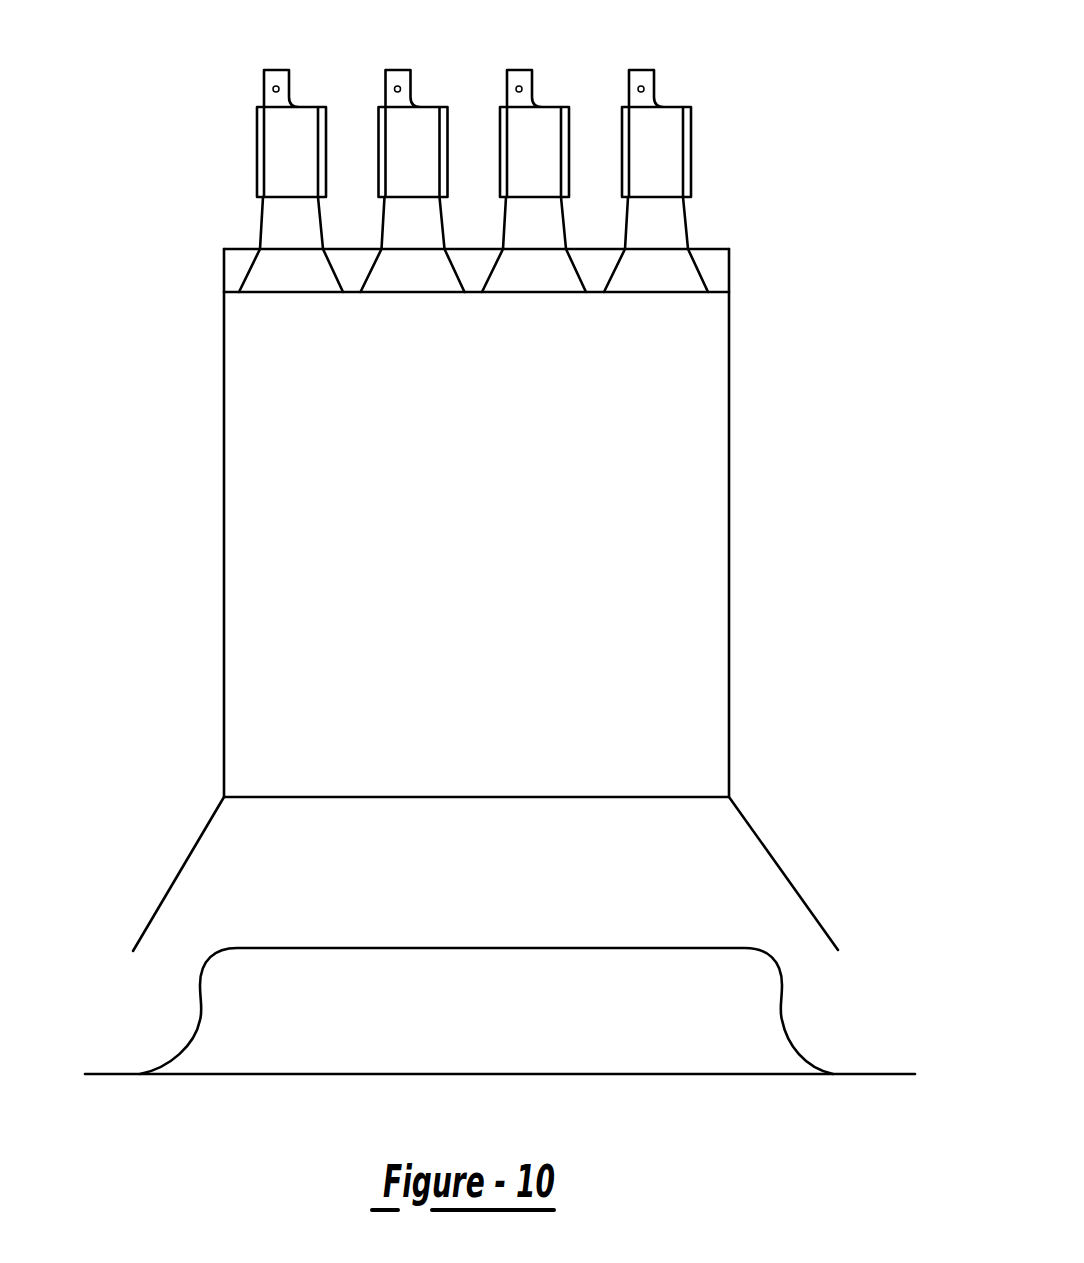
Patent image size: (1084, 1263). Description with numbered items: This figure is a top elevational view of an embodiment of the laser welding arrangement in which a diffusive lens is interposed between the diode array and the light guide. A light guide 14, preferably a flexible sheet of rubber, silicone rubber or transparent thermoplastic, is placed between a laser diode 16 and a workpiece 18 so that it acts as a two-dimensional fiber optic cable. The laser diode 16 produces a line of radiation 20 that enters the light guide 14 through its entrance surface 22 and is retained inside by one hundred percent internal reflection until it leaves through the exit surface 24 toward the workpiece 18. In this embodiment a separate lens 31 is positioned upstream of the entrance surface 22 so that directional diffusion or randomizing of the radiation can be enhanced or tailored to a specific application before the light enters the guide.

The light guide 14 is at (731, 468).
The laser diode 16 is at (665, 132).
The workpiece 18 is at (806, 999).
The line of radiation 20 is at (687, 228).
The entrance surface 22 is at (668, 292).
The exit surface 24 is at (680, 803).
The lens 31 is at (731, 262).